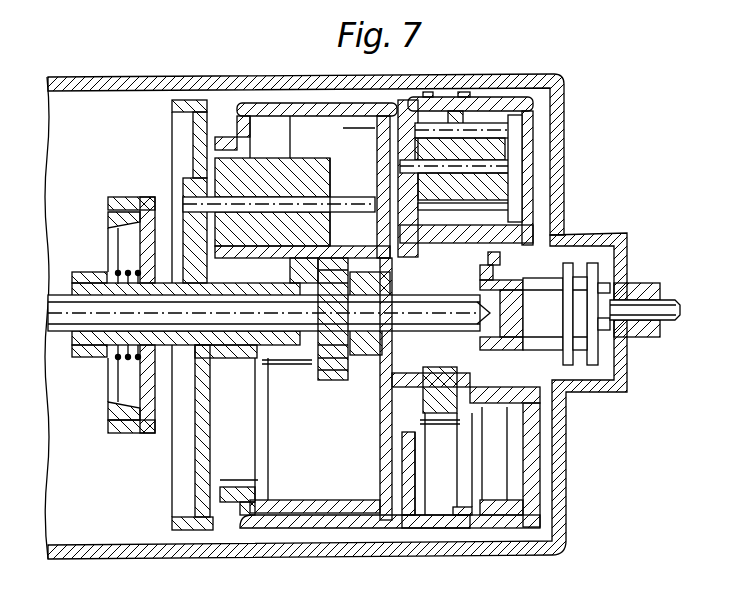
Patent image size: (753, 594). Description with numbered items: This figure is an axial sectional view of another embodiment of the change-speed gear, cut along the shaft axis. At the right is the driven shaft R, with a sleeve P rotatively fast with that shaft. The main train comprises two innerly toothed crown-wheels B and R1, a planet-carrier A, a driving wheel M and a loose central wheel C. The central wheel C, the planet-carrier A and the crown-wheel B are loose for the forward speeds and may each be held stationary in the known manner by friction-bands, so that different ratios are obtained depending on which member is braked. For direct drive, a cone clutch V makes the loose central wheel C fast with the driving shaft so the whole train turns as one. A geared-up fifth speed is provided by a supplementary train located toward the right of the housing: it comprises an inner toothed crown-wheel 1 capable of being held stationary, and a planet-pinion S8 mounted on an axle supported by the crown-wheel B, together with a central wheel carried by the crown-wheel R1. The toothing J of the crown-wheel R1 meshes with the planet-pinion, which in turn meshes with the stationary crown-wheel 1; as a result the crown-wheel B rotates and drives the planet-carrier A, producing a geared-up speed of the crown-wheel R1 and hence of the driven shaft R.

The planet-carrier A is at (183, 105).
The innerly toothed crown-wheel B is at (240, 114).
The innerly toothed crown-wheel R1 is at (343, 128).
The planet-pinion S8 is at (508, 145).
The inner toothed crown-wheel 1 is at (525, 104).
The cone clutch V is at (108, 245).
The loose central wheel C is at (290, 362).
The driving wheel M is at (333, 380).
The sleeve P is at (495, 272).
The driven shaft R is at (672, 322).
The toothing of crown-wheel R1 J is at (442, 420).